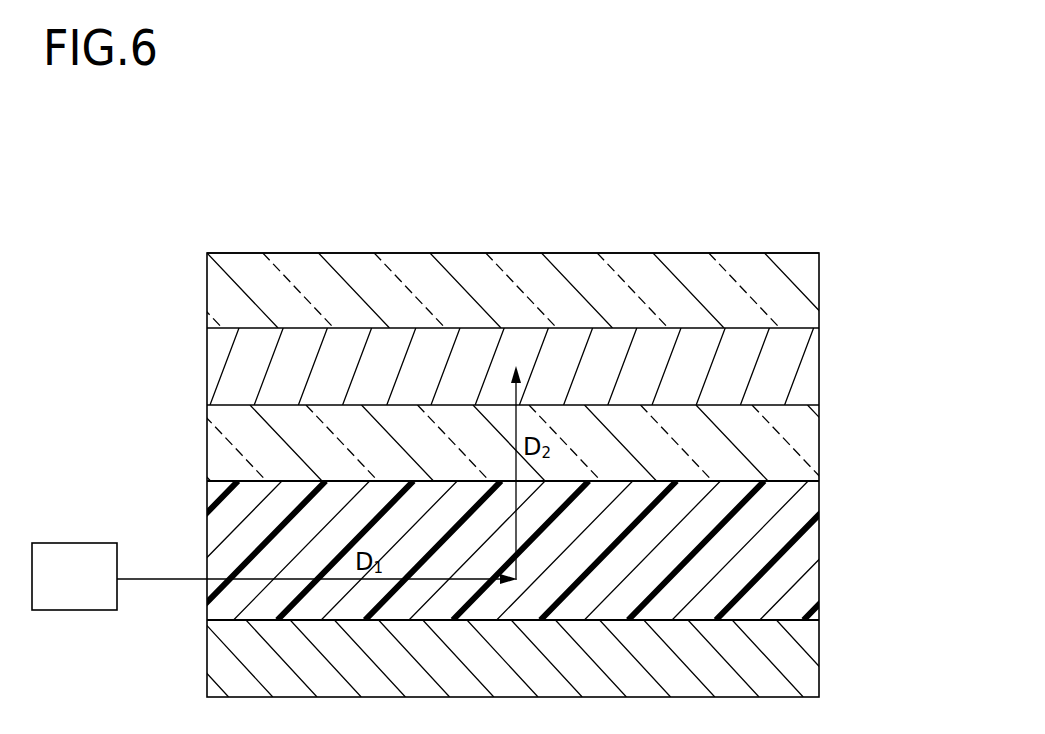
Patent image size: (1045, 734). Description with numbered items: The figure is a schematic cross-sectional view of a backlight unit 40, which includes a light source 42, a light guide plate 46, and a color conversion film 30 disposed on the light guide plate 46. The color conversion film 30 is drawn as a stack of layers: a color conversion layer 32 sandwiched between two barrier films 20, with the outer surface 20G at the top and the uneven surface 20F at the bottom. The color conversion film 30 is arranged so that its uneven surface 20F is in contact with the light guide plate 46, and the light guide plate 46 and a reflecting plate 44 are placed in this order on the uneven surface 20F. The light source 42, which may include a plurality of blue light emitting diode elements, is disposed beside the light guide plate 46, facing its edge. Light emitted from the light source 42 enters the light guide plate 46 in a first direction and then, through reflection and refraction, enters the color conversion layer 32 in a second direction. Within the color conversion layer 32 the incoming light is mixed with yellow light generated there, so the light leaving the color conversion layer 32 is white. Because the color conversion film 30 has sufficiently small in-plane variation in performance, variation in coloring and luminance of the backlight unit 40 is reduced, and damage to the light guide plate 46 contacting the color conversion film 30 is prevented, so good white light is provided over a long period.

The backlight unit 40 is at (806, 150).
The barrier film 20 is at (790, 289).
The surface of barrier film 20G is at (736, 252).
The uneven surface 20F is at (736, 485).
The color conversion film 30 is at (526, 367).
The color conversion layer 32 is at (790, 375).
The light source 42 is at (75, 611).
The reflecting plate 44 is at (790, 652).
The light guide plate 46 is at (790, 573).